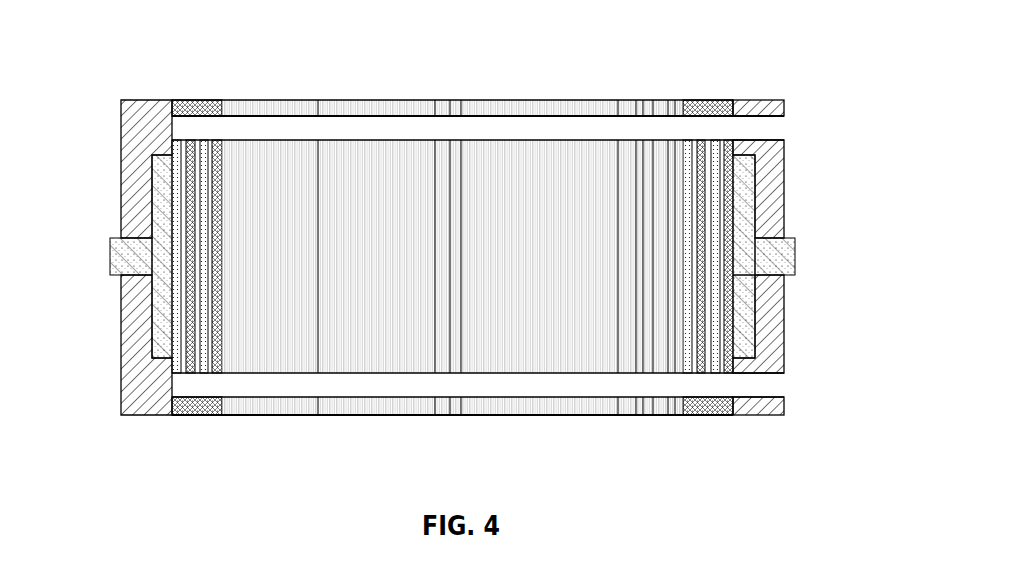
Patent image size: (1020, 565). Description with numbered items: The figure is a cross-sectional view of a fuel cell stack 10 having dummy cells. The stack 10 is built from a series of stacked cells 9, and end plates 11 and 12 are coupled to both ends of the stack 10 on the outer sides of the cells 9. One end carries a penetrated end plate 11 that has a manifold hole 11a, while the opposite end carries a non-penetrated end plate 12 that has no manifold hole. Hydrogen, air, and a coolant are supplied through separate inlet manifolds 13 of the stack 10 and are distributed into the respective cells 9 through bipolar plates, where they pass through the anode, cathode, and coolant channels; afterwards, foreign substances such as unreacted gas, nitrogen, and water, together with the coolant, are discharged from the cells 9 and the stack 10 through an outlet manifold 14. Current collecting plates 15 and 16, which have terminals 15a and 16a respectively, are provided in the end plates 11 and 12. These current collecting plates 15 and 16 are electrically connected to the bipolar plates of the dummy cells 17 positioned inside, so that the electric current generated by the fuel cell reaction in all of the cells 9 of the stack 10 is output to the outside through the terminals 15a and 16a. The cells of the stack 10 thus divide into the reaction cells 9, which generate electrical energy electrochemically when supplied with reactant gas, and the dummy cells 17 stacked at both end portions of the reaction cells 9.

The cells 9 is at (485, 155).
The stack 10 is at (750, 88).
The penetrated end plate 11 is at (768, 170).
The manifold hole 11a is at (784, 128).
The non-penetrated end plate 12 is at (121, 128).
The inlet manifolds 13 is at (357, 128).
The outlet manifold 14 is at (563, 378).
The current collecting plate 15 is at (745, 208).
The terminal 15a is at (787, 258).
The current collecting plate 16 is at (160, 187).
The terminal 16a is at (118, 255).
The dummy cells 17 is at (197, 365).